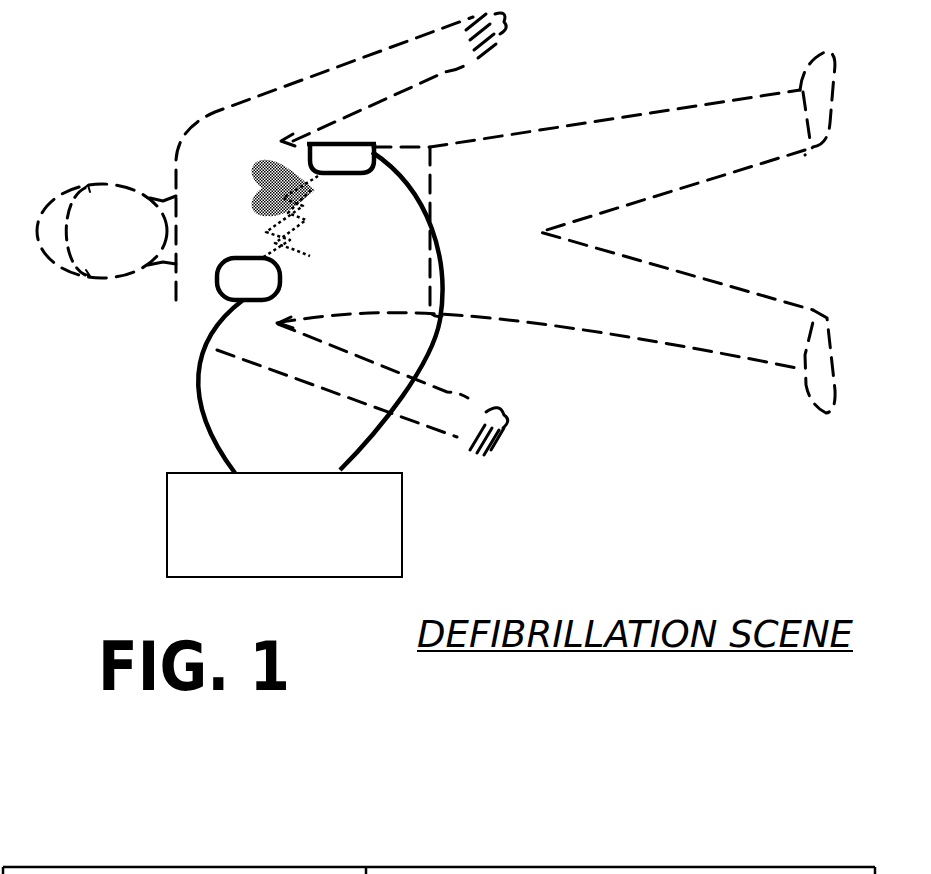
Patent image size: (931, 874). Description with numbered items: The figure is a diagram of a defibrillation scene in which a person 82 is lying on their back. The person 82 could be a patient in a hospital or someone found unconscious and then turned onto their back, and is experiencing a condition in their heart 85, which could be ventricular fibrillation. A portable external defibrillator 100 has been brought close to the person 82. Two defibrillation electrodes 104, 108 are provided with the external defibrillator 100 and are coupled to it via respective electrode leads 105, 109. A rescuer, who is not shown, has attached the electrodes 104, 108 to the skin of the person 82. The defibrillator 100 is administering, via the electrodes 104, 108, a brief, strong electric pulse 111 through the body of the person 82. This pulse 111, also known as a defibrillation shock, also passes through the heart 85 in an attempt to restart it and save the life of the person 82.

The person 82 is at (190, 150).
The heart 85 is at (264, 167).
The external defibrillator 100 is at (265, 504).
The defibrillation electrode 104 is at (216, 285).
The electrode lead 105 is at (196, 400).
The defibrillation electrode 108 is at (358, 143).
The electrode lead 109 is at (354, 456).
The electric pulse 111 is at (306, 229).